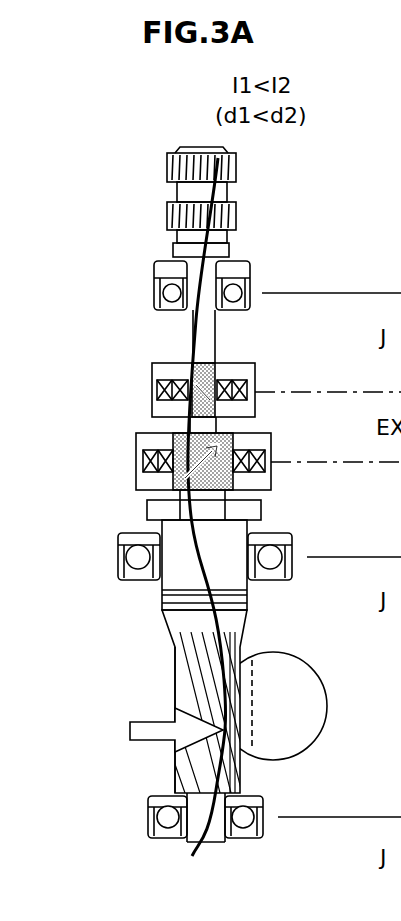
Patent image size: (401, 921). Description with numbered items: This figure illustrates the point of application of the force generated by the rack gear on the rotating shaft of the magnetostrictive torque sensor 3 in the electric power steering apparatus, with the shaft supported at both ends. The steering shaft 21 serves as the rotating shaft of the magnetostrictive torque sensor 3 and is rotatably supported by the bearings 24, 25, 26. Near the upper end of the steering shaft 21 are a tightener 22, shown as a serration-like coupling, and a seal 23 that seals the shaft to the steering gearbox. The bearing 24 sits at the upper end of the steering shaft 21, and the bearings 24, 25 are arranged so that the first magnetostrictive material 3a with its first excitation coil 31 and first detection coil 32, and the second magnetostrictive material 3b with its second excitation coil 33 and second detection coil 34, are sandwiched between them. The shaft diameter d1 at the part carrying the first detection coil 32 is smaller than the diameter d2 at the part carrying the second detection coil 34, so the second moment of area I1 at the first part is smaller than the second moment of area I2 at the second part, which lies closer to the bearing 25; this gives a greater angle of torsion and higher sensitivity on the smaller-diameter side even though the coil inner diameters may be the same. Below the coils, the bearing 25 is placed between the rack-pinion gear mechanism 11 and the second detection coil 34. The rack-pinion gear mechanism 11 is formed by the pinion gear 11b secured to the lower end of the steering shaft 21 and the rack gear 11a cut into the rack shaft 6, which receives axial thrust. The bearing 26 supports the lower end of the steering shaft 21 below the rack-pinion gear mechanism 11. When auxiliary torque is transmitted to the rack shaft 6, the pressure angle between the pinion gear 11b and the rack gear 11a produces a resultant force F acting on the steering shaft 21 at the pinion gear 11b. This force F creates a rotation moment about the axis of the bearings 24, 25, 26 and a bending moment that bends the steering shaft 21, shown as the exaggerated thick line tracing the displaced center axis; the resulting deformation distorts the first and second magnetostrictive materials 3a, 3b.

The magnetostrictive torque sensor 3 is at (68, 302).
The first magnetostrictive material 3a is at (200, 363).
The second magnetostrictive material 3b is at (180, 505).
The first excitation coil 31 is at (185, 380).
The first detection coil 32 is at (157, 390).
The second excitation coil 33 is at (168, 453).
The second detection coil 34 is at (143, 460).
The rack shaft 6 is at (327, 690).
The rack-pinion gear mechanism 11 is at (143, 656).
The rack gear 11a is at (250, 675).
The pinion gear 11b is at (197, 705).
The steering shaft 21 is at (218, 190).
The tightener 22 is at (167, 213).
The seal 23 is at (173, 257).
The bearing 24 is at (251, 287).
The bearing 25 is at (127, 579).
The bearing 26 is at (148, 817).
The diameter d1 is at (204, 328).
The diameter d2 is at (204, 496).
The second moment of area I1 is at (208, 363).
The second moment of area I2 is at (200, 489).
The force F is at (162, 730).